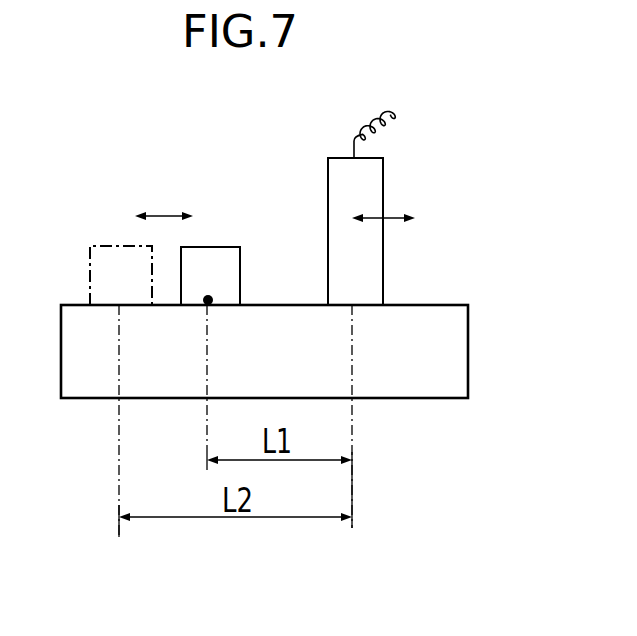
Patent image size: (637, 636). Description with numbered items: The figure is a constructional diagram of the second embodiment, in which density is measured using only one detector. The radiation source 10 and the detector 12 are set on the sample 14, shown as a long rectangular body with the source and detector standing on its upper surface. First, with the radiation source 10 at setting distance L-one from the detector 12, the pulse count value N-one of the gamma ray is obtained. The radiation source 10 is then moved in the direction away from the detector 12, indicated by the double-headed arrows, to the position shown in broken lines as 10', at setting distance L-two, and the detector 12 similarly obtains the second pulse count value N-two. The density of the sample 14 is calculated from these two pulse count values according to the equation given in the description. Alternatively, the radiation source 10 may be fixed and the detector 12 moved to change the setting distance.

The radiation source (moved position) 10' is at (92, 230).
The radiation source 10 is at (193, 230).
The detector 12 is at (385, 180).
The sample 14 is at (470, 322).